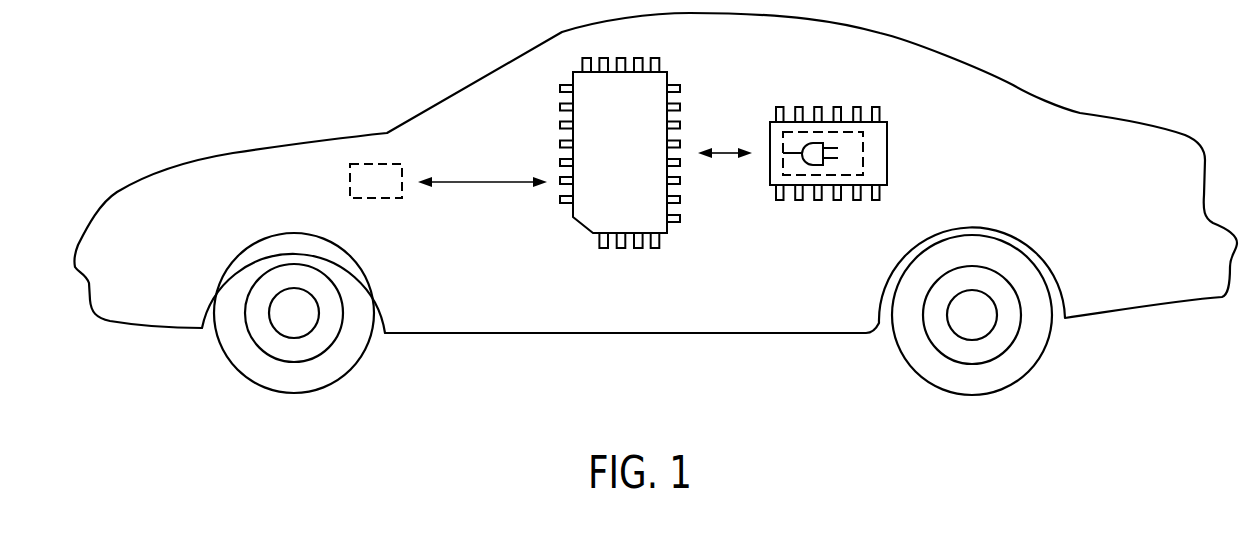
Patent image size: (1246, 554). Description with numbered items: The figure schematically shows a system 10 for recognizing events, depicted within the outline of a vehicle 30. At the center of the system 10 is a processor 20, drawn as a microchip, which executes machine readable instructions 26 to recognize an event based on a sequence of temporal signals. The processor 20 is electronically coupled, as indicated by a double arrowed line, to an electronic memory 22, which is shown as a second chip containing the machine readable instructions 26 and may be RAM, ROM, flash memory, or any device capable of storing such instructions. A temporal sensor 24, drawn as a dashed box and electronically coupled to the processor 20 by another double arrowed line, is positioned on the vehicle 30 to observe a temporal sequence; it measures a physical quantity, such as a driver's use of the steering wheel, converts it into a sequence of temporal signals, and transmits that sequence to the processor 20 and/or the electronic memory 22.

The system for recognizing events 10 is at (492, 92).
The processor 20 is at (682, 240).
The electronic memory 22 is at (829, 216).
The temporal sensor 24 is at (367, 163).
The machine readable instructions 26 is at (865, 153).
The vehicle 30 is at (502, 350).